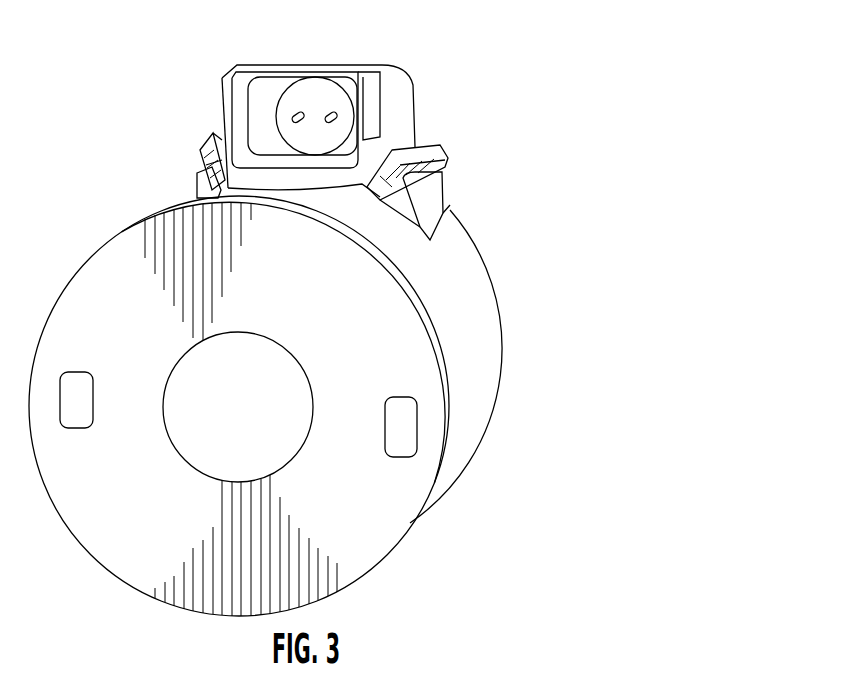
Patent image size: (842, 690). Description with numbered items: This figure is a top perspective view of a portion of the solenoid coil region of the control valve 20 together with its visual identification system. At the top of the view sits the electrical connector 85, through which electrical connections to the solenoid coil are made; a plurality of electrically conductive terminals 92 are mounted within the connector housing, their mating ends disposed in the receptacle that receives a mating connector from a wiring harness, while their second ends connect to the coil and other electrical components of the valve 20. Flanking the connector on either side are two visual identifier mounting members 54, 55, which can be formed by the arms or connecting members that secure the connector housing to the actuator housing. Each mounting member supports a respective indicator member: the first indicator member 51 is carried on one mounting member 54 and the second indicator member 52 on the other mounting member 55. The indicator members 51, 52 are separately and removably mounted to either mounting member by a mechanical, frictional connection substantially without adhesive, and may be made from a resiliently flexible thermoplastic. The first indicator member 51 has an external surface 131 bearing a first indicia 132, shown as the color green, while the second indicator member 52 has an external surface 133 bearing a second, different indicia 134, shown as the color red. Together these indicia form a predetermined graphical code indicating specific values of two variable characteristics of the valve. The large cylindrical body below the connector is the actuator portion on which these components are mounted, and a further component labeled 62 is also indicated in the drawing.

The control valve 20 is at (172, 123).
The first indicator member 51 is at (438, 147).
The second indicator member 52 is at (220, 148).
The visual identifier mounting member 54 is at (428, 188).
The visual identifier mounting member 55 is at (207, 187).
The housing body 62 is at (492, 113).
The electrical connector 85 is at (283, 63).
The electrically conductive terminals 92 is at (333, 113).
The external surface 131 is at (409, 148).
The first indicia 132 is at (415, 148).
The external surface 133 is at (202, 155).
The second indicia 134 is at (206, 165).